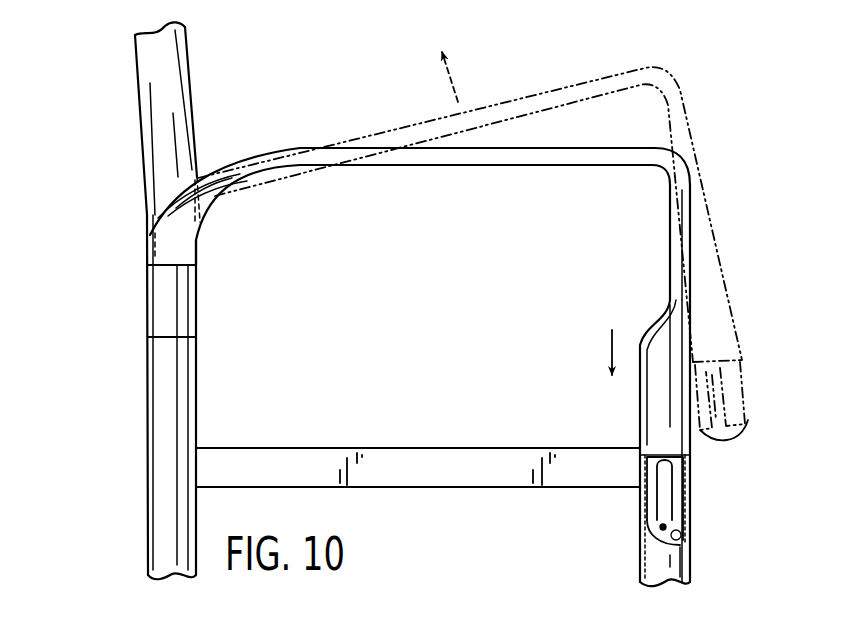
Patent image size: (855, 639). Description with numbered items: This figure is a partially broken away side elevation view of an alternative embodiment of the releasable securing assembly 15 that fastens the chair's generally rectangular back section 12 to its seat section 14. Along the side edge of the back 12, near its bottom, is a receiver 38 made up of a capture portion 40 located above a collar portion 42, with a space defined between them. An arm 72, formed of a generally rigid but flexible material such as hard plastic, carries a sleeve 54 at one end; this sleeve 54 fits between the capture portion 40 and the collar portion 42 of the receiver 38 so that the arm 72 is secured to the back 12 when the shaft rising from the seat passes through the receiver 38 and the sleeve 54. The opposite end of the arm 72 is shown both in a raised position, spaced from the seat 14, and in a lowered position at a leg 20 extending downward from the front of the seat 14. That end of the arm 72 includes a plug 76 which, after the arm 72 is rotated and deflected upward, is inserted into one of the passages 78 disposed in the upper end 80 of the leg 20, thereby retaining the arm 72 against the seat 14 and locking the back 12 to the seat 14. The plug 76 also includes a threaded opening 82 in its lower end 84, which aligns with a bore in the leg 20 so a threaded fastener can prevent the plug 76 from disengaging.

The back section 12 is at (138, 92).
The capture portion 40 is at (147, 121).
The sleeve 54 is at (147, 232).
The securing assembly 15 is at (114, 264).
The receiver 38 is at (136, 297).
The collar portion 42 is at (199, 303).
The arm 72 is at (447, 180).
The seat section 14 is at (477, 490).
The leg 20 is at (640, 550).
The plug 76 is at (677, 492).
The passage 78 is at (680, 526).
The upper end 80 is at (683, 455).
The threaded opening 82 is at (655, 525).
The lower end 84 is at (683, 543).